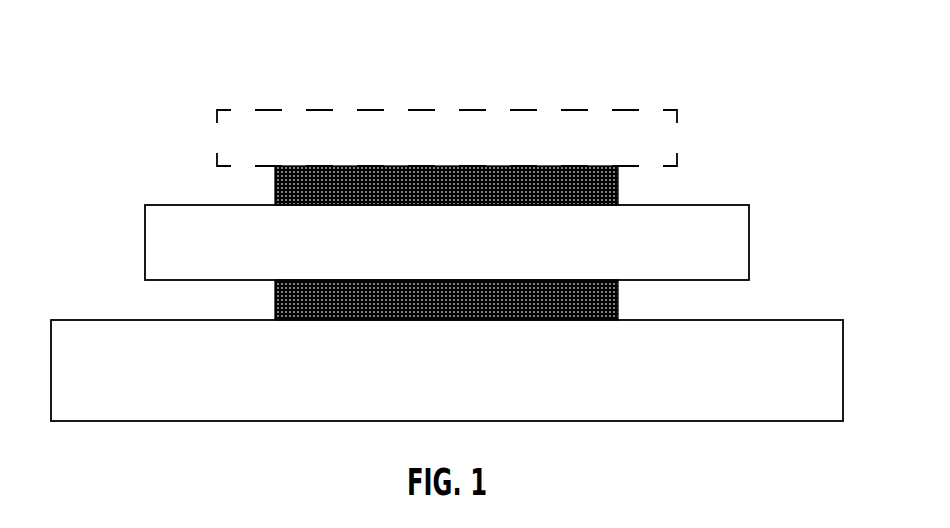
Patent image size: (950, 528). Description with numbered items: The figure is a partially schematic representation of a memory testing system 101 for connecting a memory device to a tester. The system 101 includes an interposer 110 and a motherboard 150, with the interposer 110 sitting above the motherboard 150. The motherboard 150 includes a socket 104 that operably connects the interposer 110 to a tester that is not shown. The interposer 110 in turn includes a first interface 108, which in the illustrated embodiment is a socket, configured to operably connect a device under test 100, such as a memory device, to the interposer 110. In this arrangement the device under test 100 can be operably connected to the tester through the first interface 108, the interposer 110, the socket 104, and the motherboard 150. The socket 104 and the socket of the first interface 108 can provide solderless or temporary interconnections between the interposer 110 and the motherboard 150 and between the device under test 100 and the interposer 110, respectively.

The memory testing system 101 is at (106, 33).
The device under test 100 is at (497, 154).
The first interface 108 is at (620, 197).
The interposer 110 is at (538, 254).
The socket 104 is at (620, 313).
The motherboard 150 is at (557, 387).